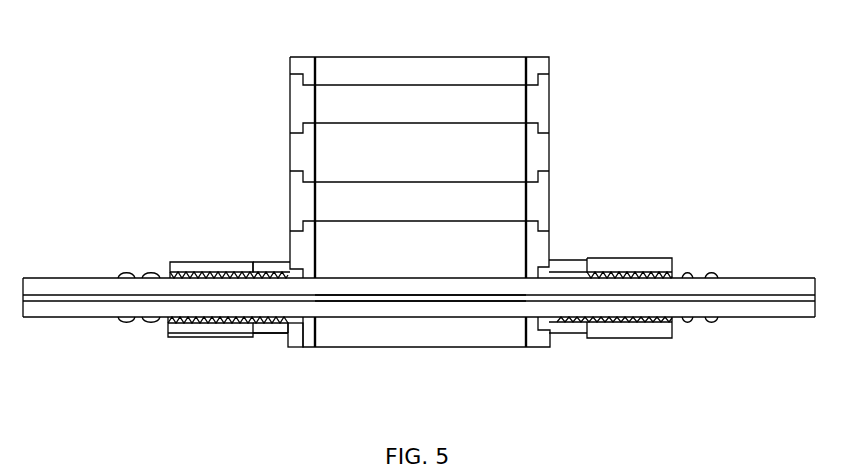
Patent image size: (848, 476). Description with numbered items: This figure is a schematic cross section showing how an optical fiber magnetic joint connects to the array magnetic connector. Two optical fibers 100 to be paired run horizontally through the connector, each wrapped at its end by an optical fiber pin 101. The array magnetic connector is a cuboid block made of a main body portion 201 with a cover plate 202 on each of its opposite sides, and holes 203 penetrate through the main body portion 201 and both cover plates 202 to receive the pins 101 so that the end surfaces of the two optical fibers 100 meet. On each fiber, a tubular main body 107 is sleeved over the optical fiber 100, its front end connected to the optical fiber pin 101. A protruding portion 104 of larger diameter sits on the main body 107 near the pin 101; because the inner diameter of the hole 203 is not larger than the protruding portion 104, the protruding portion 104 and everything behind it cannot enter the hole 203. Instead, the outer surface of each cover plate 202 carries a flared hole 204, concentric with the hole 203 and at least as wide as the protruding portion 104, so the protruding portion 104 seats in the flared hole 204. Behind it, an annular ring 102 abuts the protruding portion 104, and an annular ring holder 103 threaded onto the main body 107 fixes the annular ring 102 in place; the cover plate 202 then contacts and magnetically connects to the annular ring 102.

The optical fiber 100 is at (84, 294).
The optical fiber pin 101 is at (378, 308).
The annular ring 102 is at (272, 330).
The annular ring holder 103 is at (208, 330).
The protruding portion 104 is at (298, 326).
The main body 107 is at (170, 278).
The main body portion 201 is at (462, 70).
The cover plate 202 is at (300, 145).
The holes 203 is at (398, 108).
The flared hole 204 is at (290, 98).